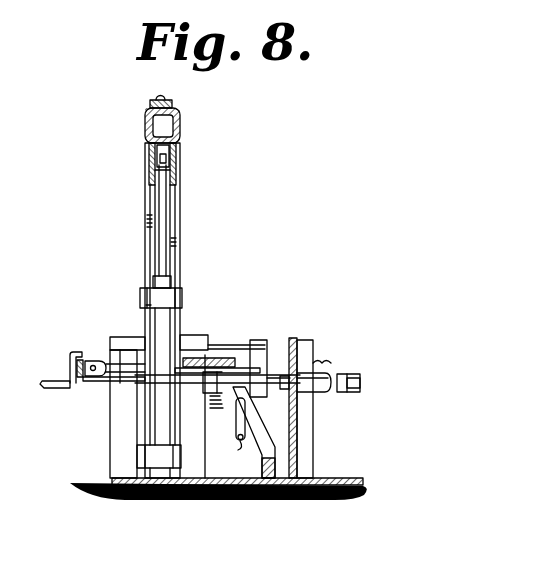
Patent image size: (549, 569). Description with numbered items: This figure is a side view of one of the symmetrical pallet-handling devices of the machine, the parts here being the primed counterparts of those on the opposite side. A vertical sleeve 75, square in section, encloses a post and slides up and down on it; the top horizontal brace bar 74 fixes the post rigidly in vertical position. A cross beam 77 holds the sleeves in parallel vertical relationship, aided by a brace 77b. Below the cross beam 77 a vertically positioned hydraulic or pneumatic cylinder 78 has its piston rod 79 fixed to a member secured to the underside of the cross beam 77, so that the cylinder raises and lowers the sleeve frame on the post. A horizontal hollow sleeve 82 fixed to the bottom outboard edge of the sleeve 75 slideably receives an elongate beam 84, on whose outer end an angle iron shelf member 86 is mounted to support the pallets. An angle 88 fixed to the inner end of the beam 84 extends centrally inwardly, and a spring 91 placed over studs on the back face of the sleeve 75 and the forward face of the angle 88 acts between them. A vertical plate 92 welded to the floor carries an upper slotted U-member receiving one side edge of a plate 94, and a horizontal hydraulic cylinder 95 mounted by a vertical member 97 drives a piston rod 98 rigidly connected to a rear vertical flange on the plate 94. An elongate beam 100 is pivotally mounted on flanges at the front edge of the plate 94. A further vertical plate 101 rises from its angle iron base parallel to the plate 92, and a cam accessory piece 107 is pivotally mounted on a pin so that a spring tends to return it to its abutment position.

The top horizontal brace bar 74 is at (150, 103).
The cross beam 77 is at (182, 128).
The brace 77b is at (180, 172).
The sleeve 75 is at (145, 206).
The piston rod 79 is at (166, 212).
The hydraulic or pneumatic cylinder 78 is at (178, 318).
The plate 94 is at (122, 338).
The elongate beam 100 is at (80, 352).
The angle iron shelf member 86 is at (76, 388).
The horizontal hollow sleeve 82 is at (120, 380).
The vertical plate 92 is at (118, 460).
The elongate beam 84 is at (230, 348).
The angle 88 is at (252, 342).
The piston rod 98 is at (287, 340).
The vertical member 97 is at (314, 357).
The horizontal hydraulic cylinder 95 is at (352, 393).
The spring 91 is at (215, 388).
The cam accessory piece 107 is at (240, 440).
The vertical plate 101 is at (222, 473).